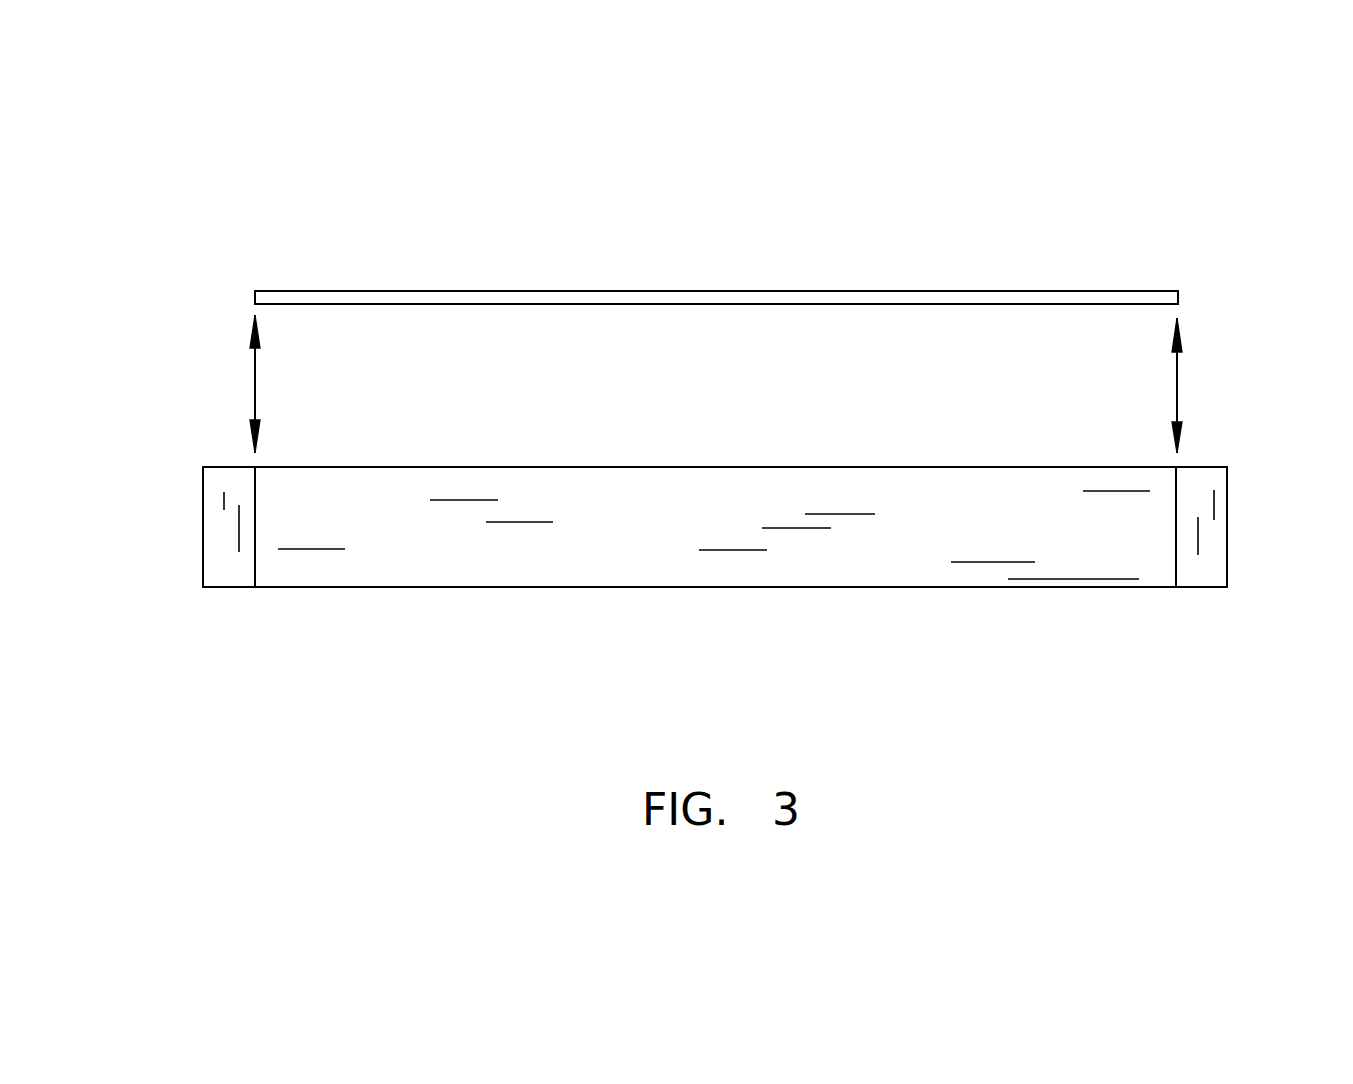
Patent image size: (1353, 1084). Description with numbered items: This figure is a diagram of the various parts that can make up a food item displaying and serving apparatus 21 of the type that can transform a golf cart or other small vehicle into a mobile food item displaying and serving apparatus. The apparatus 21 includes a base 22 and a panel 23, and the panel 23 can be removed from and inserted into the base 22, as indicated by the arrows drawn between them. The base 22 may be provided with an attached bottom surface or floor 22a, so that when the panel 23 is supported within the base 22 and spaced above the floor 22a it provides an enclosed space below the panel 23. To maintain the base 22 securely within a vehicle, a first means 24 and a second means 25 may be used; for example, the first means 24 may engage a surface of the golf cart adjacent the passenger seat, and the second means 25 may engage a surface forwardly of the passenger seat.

The food item displaying and serving apparatus 21 is at (212, 350).
The base 22 is at (1203, 370).
The floor 22a is at (1023, 588).
The panel 23 is at (1050, 292).
The means 24 is at (203, 523).
The means 25 is at (1227, 527).